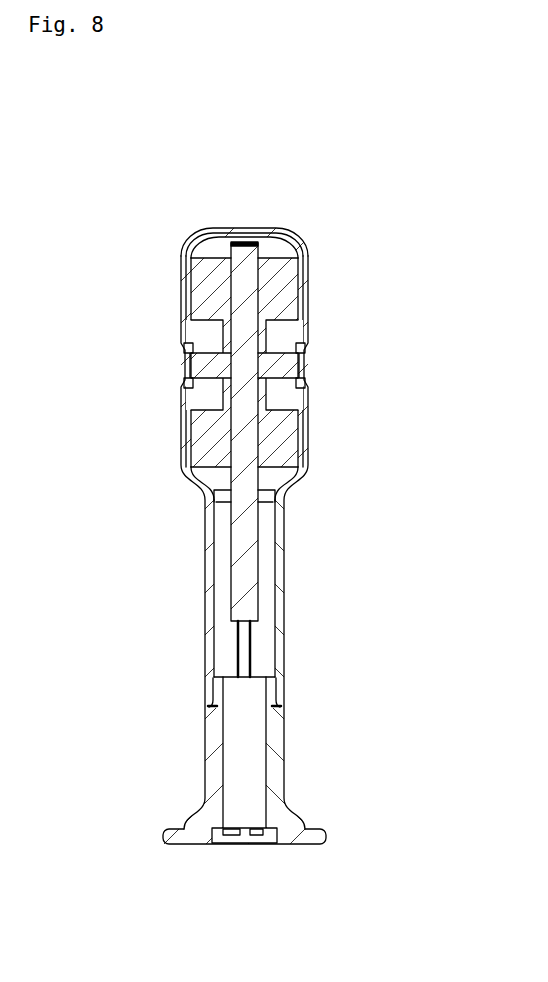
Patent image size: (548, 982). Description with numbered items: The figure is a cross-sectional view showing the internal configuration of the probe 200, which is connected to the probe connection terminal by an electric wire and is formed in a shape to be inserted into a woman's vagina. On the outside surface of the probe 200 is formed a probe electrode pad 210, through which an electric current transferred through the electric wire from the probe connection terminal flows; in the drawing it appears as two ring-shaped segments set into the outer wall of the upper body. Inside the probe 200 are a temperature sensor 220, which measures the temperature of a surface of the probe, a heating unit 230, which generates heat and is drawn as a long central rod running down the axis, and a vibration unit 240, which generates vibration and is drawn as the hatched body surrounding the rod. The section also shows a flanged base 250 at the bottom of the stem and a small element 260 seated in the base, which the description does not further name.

The probe 200 is at (340, 245).
The probe electrode pad 210 is at (182, 293).
The temperature sensor 220 is at (243, 227).
The heating unit 230 is at (243, 428).
The vibration unit 240 is at (286, 362).
The base 250 is at (315, 836).
The electrode terminal 260 is at (243, 838).